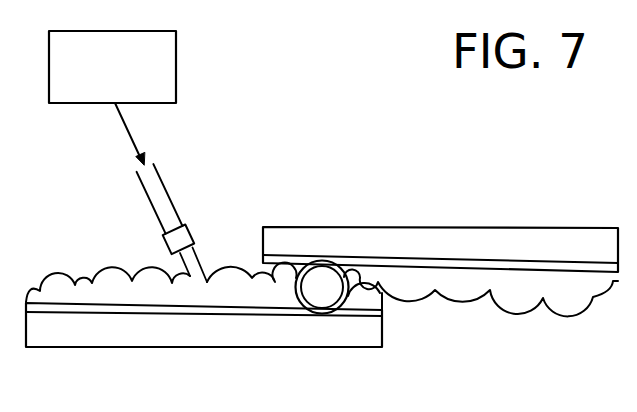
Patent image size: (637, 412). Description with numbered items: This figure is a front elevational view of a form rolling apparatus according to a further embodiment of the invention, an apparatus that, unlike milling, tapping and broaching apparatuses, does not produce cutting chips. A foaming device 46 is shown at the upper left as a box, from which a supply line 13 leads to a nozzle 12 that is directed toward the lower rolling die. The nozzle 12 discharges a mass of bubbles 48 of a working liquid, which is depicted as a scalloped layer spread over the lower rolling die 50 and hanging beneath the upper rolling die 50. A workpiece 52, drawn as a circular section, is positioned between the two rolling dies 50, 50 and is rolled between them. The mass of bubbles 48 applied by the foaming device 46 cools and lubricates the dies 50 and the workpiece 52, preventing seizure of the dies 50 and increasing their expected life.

The foaming device 46 is at (176, 70).
The foam supply line 13 is at (125, 130).
The nozzle 12 is at (192, 243).
The mass of bubbles 48 is at (115, 278).
The rolling dies 50 is at (120, 340).
The workpiece 52 is at (325, 278).